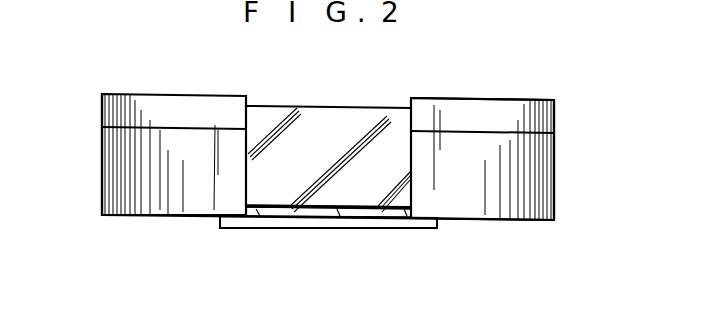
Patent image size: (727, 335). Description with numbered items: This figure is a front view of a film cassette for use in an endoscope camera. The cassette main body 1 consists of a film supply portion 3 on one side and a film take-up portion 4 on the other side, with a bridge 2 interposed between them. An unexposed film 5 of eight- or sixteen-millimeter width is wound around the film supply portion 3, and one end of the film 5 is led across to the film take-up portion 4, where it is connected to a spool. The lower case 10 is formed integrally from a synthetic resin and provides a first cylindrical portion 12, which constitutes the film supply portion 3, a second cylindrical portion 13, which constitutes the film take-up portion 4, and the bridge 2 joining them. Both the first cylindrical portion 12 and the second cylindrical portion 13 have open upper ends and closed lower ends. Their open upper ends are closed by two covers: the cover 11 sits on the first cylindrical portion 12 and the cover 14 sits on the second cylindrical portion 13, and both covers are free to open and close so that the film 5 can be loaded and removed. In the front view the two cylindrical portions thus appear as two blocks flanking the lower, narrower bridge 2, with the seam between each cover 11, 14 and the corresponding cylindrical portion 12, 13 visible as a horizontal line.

The cassette main body 1 is at (490, 90).
The bridge 2 is at (355, 228).
The film supply portion 3 is at (175, 200).
The film take-up portion 4 is at (545, 183).
The unexposed film 5 is at (301, 207).
The lower case 10 is at (570, 216).
The cover 11 is at (170, 95).
The first cylindrical portion 12 is at (101, 171).
The second cylindrical portion 13 is at (556, 143).
The cover 14 is at (540, 99).